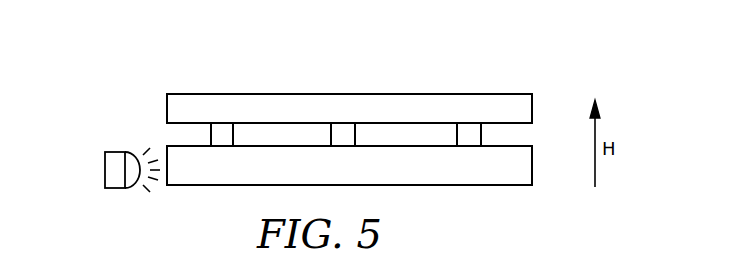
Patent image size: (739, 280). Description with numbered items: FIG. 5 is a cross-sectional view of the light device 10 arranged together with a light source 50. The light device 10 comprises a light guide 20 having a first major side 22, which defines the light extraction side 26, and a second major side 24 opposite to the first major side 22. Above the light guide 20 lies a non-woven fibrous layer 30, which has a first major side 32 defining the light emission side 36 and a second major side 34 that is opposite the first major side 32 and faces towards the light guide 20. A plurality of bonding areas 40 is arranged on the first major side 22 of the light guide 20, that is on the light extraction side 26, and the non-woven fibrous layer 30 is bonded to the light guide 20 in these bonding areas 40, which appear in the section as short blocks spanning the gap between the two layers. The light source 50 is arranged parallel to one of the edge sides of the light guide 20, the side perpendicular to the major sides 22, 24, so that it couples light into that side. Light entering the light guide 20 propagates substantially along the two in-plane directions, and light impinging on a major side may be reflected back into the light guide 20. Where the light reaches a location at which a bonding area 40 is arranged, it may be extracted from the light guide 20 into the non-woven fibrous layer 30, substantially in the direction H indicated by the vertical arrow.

The light device 10 is at (158, 60).
The light guide 20 is at (211, 176).
The first major side 22 is at (185, 144).
The second major side 24 is at (183, 187).
The light extraction side 26 is at (520, 146).
The non-woven fibrous layer 30 is at (167, 106).
The first major side 32 is at (423, 94).
The second major side 34 is at (423, 124).
The light emission side 36 is at (344, 94).
The bonding areas 40 is at (228, 134).
The light source 50 is at (110, 175).